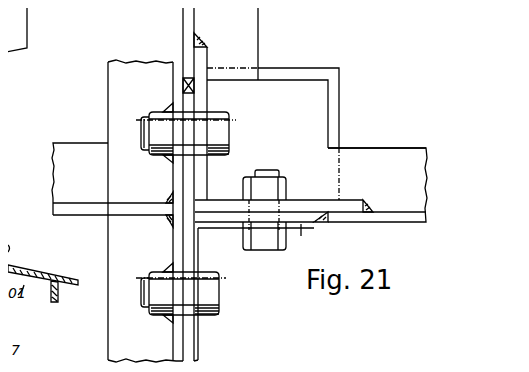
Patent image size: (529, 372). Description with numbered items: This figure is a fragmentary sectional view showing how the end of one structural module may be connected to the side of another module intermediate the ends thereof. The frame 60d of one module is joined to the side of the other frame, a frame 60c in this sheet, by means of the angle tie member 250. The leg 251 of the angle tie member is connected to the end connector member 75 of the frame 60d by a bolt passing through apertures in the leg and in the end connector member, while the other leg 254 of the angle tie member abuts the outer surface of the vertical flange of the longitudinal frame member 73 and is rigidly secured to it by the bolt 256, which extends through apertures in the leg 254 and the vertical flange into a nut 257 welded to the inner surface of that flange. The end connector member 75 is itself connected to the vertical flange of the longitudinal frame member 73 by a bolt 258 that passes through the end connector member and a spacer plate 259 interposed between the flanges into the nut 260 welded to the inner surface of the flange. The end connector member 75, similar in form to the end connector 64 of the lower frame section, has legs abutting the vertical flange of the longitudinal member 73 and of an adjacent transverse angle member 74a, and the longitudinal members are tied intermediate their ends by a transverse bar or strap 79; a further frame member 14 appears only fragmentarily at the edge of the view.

The frame member 14 is at (27, 8).
The left frame section 60c is at (68, 132).
The frame 60d is at (358, 78).
The end connector 64 is at (294, 72).
The longitudinal angle member 73 is at (413, 221).
The transverse angle member 74a is at (250, 23).
The end connector member 75 is at (300, 203).
The bar or strap 79 is at (84, 212).
The angle tie member 250 is at (226, 221).
The leg 251 is at (300, 224).
The leg 254 is at (190, 335).
The bolt 256 is at (208, 292).
The nut 257 is at (160, 272).
The bolt 258 is at (220, 125).
The spacer plate 259 is at (188, 173).
The nut 260 is at (158, 110).